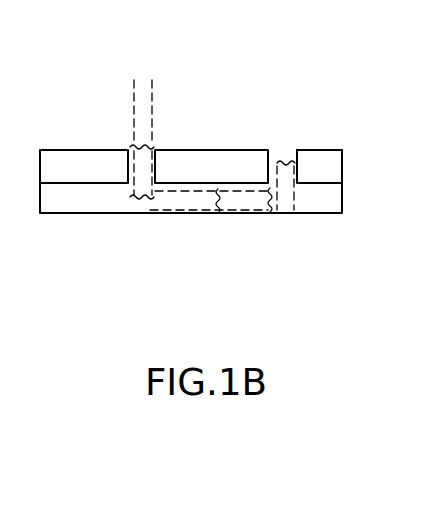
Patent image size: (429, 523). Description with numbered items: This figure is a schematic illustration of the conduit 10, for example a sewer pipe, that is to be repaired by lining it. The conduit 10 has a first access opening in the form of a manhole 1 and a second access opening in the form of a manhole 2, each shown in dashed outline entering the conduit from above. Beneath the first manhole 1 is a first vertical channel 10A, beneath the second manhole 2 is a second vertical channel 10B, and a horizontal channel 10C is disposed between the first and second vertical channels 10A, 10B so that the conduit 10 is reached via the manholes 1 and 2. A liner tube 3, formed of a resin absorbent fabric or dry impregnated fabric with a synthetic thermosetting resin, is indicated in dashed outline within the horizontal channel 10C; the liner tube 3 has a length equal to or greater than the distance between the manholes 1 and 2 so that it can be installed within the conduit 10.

The manhole 1 is at (156, 148).
The manhole 2 is at (296, 148).
The liner tube 3 is at (209, 213).
The conduit 10 is at (77, 192).
The first vertical channel 10A is at (129, 172).
The second vertical channel 10B is at (294, 167).
The horizontal channel 10C is at (188, 199).